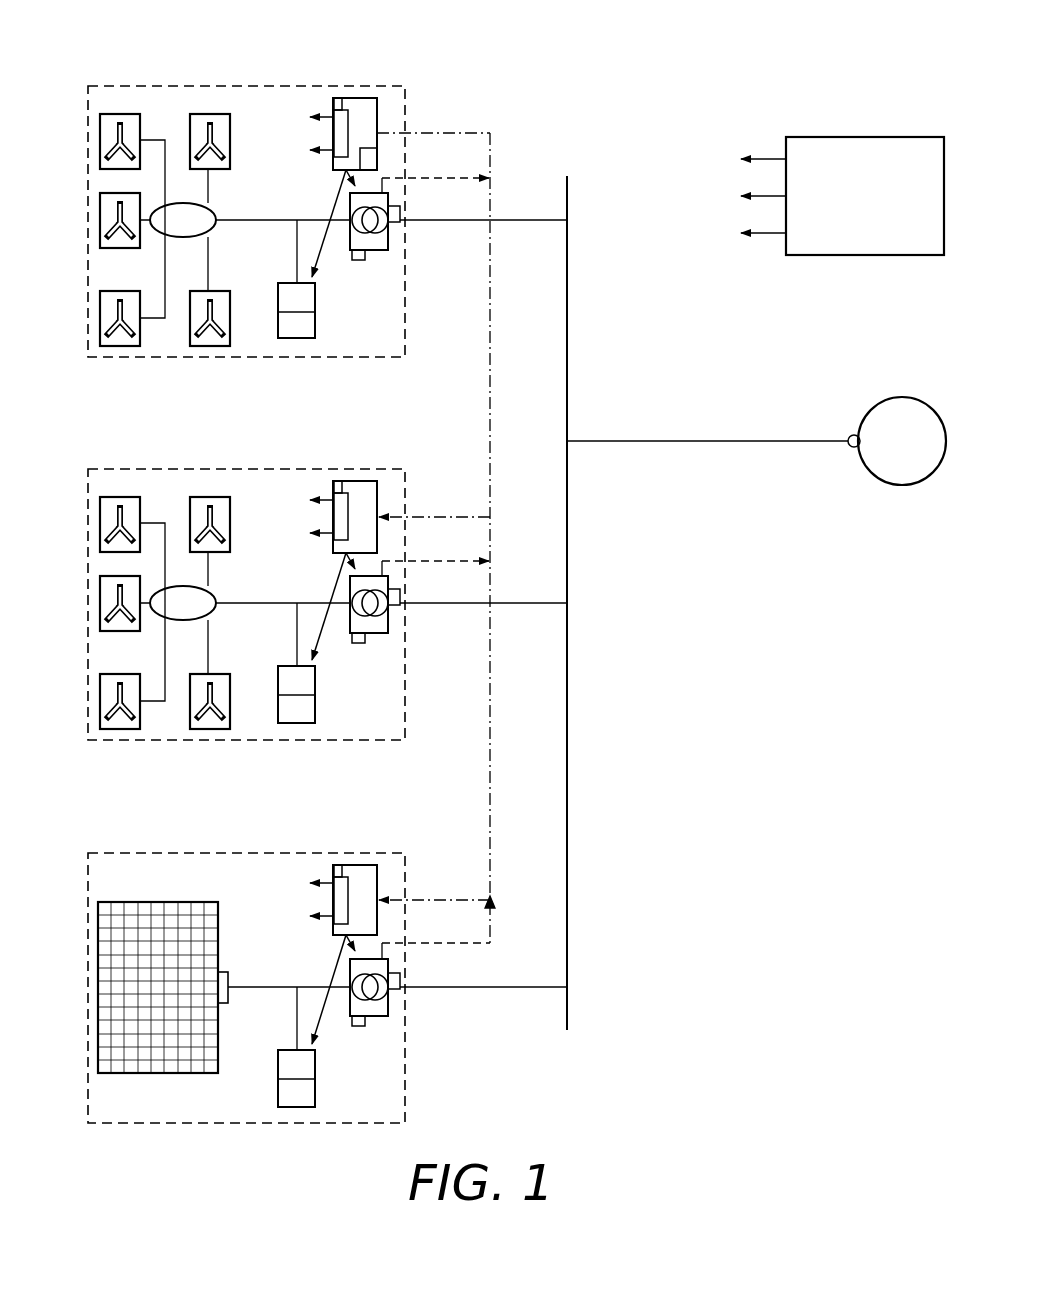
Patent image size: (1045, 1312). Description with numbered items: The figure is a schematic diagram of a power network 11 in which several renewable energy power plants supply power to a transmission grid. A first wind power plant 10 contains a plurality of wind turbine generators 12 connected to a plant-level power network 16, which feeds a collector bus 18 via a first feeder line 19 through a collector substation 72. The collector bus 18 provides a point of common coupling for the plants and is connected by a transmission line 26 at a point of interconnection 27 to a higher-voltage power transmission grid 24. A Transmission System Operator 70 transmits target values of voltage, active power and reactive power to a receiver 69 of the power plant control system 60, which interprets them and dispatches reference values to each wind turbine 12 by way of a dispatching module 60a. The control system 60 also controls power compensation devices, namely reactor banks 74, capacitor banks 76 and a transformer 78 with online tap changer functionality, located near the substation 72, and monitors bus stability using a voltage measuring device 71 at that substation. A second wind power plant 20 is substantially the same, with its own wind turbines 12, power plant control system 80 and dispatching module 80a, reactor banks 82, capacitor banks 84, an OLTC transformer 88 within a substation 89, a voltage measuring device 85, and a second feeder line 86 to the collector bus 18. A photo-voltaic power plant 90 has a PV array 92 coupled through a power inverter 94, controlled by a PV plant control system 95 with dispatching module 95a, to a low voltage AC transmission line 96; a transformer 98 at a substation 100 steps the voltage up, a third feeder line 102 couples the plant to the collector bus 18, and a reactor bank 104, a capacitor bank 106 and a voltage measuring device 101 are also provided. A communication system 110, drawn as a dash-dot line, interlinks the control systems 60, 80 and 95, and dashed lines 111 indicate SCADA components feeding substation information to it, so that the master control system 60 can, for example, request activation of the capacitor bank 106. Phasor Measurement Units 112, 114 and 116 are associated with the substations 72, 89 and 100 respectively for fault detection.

The wind power plant 10 is at (118, 86).
The power network 11 is at (712, 692).
The wind turbine generators 12 is at (208, 114).
The plant-level power network 16 is at (212, 207).
The collector bus 18 is at (567, 272).
The first feeder line 19 is at (527, 218).
The second wind power plant 20 is at (118, 469).
The power transmission grid 24 is at (900, 397).
The transmission line 26 is at (735, 441).
The point of interconnection 27 is at (850, 450).
The power plant control system 60 is at (360, 98).
The dispatching module 60a is at (336, 98).
The receiver 69 is at (380, 153).
The Transmission System Operator 70 is at (914, 137).
The voltage measuring device 71 is at (358, 262).
The collector substation 72 is at (392, 200).
The reactor banks 74 is at (283, 293).
The capacitor banks 76 is at (298, 338).
The transformer 78 is at (392, 245).
The power plant control system 80 is at (360, 481).
The dispatching module 80a is at (336, 481).
The reactor banks 82 is at (283, 676).
The capacitor banks 84 is at (298, 723).
The voltage measuring device 85 is at (358, 645).
The second feeder line 86 is at (527, 602).
The transformer 88 is at (392, 628).
The substation 89 is at (392, 584).
The photo-voltaic power plant 90 is at (118, 853).
The PV array 92 is at (98, 918).
The power inverter 94 is at (230, 999).
The PV plant control system 95 is at (360, 865).
The dispatching module 95a is at (336, 865).
The low voltage AC transmission line 96 is at (260, 987).
The transformer 98 is at (392, 1012).
The substation 100 is at (392, 967).
The voltage measuring device 101 is at (358, 1028).
The third feeder line 102 is at (527, 986).
The reactor bank 104 is at (283, 1060).
The capacitor bank 106 is at (298, 1106).
The communication system 110 is at (487, 403).
The dashed lines 111 is at (462, 178).
The Phasor Measurement Unit 112 is at (405, 222).
The second PMU 114 is at (405, 605).
The third PMU 116 is at (405, 990).